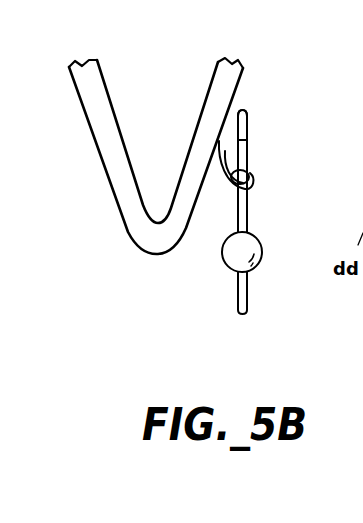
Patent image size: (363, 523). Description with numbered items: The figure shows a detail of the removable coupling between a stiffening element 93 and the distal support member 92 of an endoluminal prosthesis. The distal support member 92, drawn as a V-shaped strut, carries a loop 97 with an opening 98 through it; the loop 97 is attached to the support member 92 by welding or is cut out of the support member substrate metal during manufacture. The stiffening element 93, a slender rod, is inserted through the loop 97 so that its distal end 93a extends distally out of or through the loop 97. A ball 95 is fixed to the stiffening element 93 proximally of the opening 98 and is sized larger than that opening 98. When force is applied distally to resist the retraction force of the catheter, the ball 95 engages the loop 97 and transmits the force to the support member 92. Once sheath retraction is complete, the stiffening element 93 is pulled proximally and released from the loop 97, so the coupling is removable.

The distal support member 92 is at (232, 64).
The stiffening element 93 is at (247, 293).
The distal end 93a is at (241, 110).
The ball 95 is at (223, 258).
The loop 97 is at (251, 173).
The opening 98 is at (252, 183).